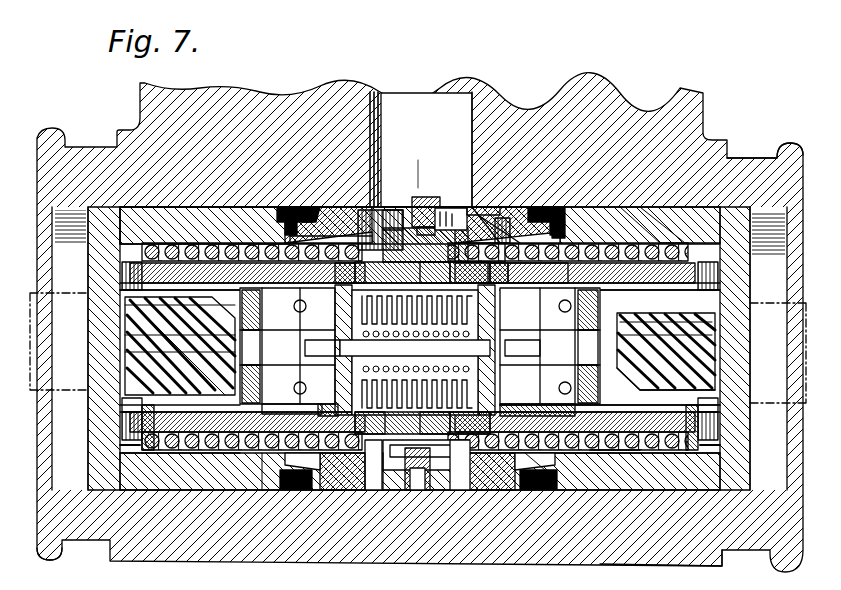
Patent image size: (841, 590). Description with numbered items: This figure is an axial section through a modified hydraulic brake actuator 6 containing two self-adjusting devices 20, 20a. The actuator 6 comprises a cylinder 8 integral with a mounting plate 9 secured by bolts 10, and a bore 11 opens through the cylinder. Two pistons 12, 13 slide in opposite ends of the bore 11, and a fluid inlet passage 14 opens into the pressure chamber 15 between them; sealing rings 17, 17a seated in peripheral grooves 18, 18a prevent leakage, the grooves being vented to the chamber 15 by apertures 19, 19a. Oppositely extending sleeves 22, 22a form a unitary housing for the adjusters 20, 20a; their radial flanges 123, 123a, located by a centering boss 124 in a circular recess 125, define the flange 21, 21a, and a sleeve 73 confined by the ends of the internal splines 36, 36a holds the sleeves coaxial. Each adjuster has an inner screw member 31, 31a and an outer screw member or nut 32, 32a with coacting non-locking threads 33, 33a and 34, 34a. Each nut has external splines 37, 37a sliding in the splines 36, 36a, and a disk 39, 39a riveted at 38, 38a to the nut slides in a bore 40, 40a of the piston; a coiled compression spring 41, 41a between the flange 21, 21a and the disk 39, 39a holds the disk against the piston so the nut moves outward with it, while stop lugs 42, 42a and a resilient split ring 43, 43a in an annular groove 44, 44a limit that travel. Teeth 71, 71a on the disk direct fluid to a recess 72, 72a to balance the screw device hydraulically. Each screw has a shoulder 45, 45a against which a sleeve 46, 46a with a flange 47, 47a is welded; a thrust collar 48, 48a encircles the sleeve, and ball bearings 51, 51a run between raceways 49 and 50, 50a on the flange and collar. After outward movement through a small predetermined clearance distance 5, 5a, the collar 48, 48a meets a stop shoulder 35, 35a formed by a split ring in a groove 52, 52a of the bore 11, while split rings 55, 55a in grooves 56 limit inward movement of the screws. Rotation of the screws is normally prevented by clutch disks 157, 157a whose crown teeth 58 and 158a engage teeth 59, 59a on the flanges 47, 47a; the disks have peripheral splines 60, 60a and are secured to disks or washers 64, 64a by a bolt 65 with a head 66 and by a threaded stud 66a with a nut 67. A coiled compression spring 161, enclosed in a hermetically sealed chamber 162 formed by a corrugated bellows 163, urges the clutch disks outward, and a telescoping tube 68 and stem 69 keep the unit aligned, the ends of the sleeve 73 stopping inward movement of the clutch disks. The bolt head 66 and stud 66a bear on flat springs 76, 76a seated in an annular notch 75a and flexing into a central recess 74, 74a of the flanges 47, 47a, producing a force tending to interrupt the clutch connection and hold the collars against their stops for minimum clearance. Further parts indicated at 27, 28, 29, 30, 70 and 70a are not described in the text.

The shaft 5 is at (260, 471).
The shaft 5a is at (530, 460).
The actuator 6 is at (752, 153).
The cylinder 8 is at (506, 560).
The mounting plate 9 is at (712, 111).
The bolts 10 is at (410, 186).
The bore 11 is at (78, 492).
The piston 12 is at (115, 352).
The piston 13 is at (722, 296).
The fluid inlet passage 14 is at (458, 108).
The pressure chamber 15 is at (488, 212).
The sealing ring 17 is at (306, 205).
The sealing ring 17a is at (546, 206).
The peripheral groove 18 is at (284, 207).
The peripheral groove 18a is at (566, 210).
The aperture 19 is at (330, 234).
The aperture 19a is at (532, 490).
The self-adjusting device 20 is at (138, 385).
The self-adjusting device 20a is at (716, 370).
The flange 21 is at (395, 490).
The flange 21a is at (445, 490).
The sleeve 22 is at (172, 202).
The sleeve 22a is at (632, 488).
The wall 27 is at (474, 180).
The pin 28 is at (440, 208).
The plate 29 is at (474, 208).
The block 30 is at (393, 208).
The inner screw member 31 is at (140, 318).
The inner screw member 31a is at (646, 318).
The outer screw member 32 is at (115, 289).
The outer screw member 32a is at (720, 400).
The non-locking threads 33 is at (138, 335).
The non-locking threads 33a is at (700, 328).
The non-locking threads 34 is at (132, 305).
The non-locking threads 34a is at (712, 317).
The stop shoulder 35 is at (266, 238).
The stop shoulder 35a is at (640, 264).
The internal splines 36 is at (224, 450).
The internal splines 36a is at (618, 450).
The external splines 37 is at (164, 452).
The external splines 37a is at (700, 452).
The riveting 38 is at (118, 405).
The riveting 38a is at (720, 412).
The disk 39 is at (118, 418).
The disk 39a is at (720, 430).
The bore 40 is at (130, 448).
The bore 40a is at (715, 460).
The coiled compression spring 41 is at (200, 452).
The coiled compression spring 41a is at (650, 245).
The stop lugs 42 is at (212, 243).
The stop lugs 42a is at (645, 390).
The resilient split ring 43 is at (112, 262).
The resilient split ring 43a is at (726, 252).
The annular groove 44 is at (150, 243).
The annular groove 44a is at (676, 243).
The shoulder 45 is at (256, 345).
The shoulder 45a is at (590, 350).
The sleeve 46 is at (282, 338).
The sleeve 46a is at (590, 330).
The flange 47 is at (302, 410).
The flange 47a is at (500, 470).
The thrust collar 48 is at (250, 322).
The thrust collar 48a is at (528, 416).
The annular raceway 49 is at (346, 284).
The annular raceway 50 is at (300, 265).
The annular raceway 50a is at (598, 371).
The ball bearings 51 is at (256, 368).
The ball bearings 51a is at (566, 380).
The annular groove 52 is at (268, 432).
The annular groove 52a is at (578, 450).
The resilient split ring 55 is at (322, 228).
The resilient split ring 55a is at (604, 245).
The annular groove 56 is at (335, 252).
The crown teeth 58 is at (398, 278).
The teeth 59 is at (335, 398).
The teeth 59a is at (512, 352).
The splines 60 is at (380, 230).
The splines 60a is at (503, 238).
The disk 64 is at (426, 252).
The disk 64a is at (484, 256).
The bolt 65 is at (420, 341).
The bolt head 66 is at (312, 349).
The threaded stud 66a is at (456, 340).
The nut 67 is at (518, 332).
The tube 68 is at (406, 418).
The stem 69 is at (466, 283).
The wedge 70 is at (310, 470).
The wedge 70a is at (566, 246).
The peripheral teeth 71 is at (140, 440).
The peripheral teeth 71a is at (700, 445).
The recess 72 is at (120, 268).
The recess 72a is at (720, 265).
The sleeve 73 is at (425, 455).
The central recess 74 is at (302, 314).
The central recess 74a is at (590, 268).
The annular notch 75a is at (540, 270).
The flat spring 76 is at (304, 380).
The flat spring 76a is at (566, 313).
The radial flange 123 is at (392, 470).
The radial flange 123a is at (456, 478).
The centering boss 124 is at (430, 196).
The circular recess 125 is at (510, 222).
The clutch element 157 is at (355, 478).
The clutch element 157a is at (486, 480).
The crown teeth 158a is at (468, 418).
The coiled compression spring 161 is at (434, 418).
The hermetically sealed chamber 162 is at (435, 272).
The bellows 163 is at (372, 416).